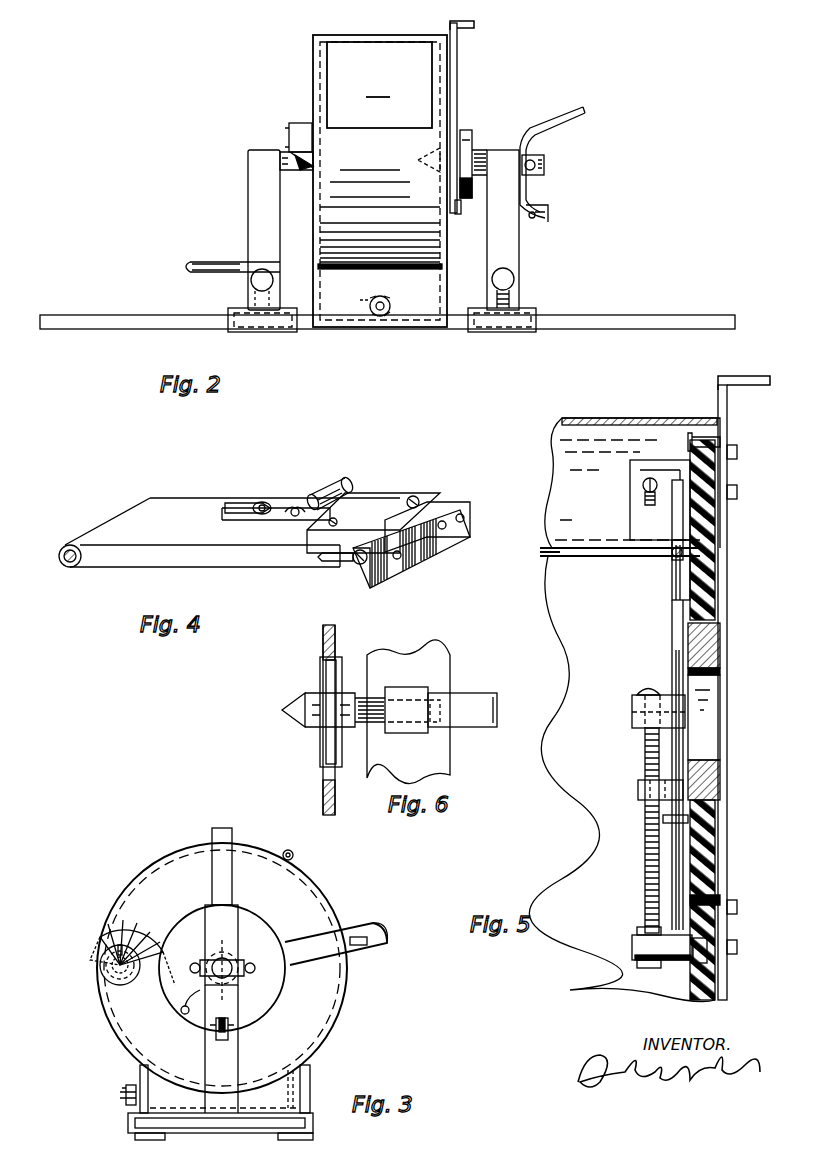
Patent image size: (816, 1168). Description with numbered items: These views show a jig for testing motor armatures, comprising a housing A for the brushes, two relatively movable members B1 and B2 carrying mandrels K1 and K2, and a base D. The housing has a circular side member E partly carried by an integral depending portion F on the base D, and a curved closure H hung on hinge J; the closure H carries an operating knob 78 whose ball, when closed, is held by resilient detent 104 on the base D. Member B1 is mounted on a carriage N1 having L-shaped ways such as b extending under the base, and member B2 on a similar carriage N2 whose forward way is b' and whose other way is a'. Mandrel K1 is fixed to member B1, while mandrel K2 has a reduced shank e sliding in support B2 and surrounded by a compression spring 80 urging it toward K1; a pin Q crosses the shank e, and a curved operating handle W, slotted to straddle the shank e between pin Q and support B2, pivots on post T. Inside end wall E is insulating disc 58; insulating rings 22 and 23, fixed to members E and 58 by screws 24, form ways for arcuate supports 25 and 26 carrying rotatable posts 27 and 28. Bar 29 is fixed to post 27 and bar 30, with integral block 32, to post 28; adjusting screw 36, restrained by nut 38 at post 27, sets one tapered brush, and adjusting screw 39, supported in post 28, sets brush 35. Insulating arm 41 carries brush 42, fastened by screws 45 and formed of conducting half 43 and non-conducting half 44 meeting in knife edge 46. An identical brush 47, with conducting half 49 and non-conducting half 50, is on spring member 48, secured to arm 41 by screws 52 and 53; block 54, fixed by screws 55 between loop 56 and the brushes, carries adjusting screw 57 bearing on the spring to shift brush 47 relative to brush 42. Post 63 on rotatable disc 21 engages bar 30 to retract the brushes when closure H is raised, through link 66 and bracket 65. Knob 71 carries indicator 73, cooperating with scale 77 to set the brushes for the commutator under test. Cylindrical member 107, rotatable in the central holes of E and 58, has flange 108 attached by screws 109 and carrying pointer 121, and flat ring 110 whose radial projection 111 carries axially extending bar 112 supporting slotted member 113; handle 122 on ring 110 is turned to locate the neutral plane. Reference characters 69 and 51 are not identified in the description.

In FIG. 2, the housing A is at (308, 58).
In FIG. 2, the closure H is at (318, 116).
In FIG. 3, the closure H is at (130, 852).
In FIG. 5, the closure H is at (600, 418).
In FIG. 2, the side member E is at (460, 56).
In FIG. 3, the side member E is at (325, 921).
In FIG. 5, the side member E is at (728, 594).
In FIG. 2, the handle 122 is at (466, 22).
In FIG. 3, the handle 122 is at (218, 827).
In FIG. 5, the handle 122 is at (718, 381).
In FIG. 2, the indicator window 69 is at (379, 85).
In FIG. 2, the slotted member 113 is at (298, 144).
In FIG. 2, the mandrel K1 is at (308, 168).
In FIG. 2, the mandrel K2 is at (420, 158).
In FIG. 6, the mandrel K2 is at (298, 703).
In FIG. 2, the mandrel-carrying member B1 is at (262, 190).
In FIG. 2, the mandrel-carrying member B2 is at (520, 252).
In FIG. 6, the mandrel-carrying member B2 is at (410, 688).
In FIG. 3, the mandrel-carrying member B2 is at (240, 1046).
In FIG. 2, the carriage N1 is at (236, 306).
In FIG. 2, the carriage N2 is at (538, 306).
In FIG. 6, the carriage N2 is at (452, 746).
In FIG. 2, the base D is at (650, 316).
In FIG. 3, the base D is at (240, 1133).
In FIG. 2, the L-shaped piece b is at (296, 342).
In FIG. 2, the L-shaped way b' is at (545, 344).
In FIG. 3, the L-shaped way b' is at (111, 1138).
In FIG. 3, the base foot a' is at (331, 1136).
In FIG. 2, the resilient detent 104 is at (366, 302).
In FIG. 2, the operating knob 78 is at (378, 316).
In FIG. 3, the operating knob 78 is at (122, 1093).
In FIG. 2, the depending portion F is at (446, 304).
In FIG. 3, the depending portion F is at (296, 1096).
In FIG. 2, the knob 71 is at (470, 130).
In FIG. 3, the knob 71 is at (100, 966).
In FIG. 2, the reduced shank e is at (483, 150).
In FIG. 6, the reduced shank e is at (370, 697).
In FIG. 3, the reduced shank e is at (228, 960).
In FIG. 2, the compression spring 80 is at (470, 195).
In FIG. 6, the compression spring 80 is at (372, 722).
In FIG. 2, the flat ring 110 is at (456, 216).
In FIG. 6, the flat ring 110 is at (343, 770).
In FIG. 3, the flat ring 110 is at (184, 1016).
In FIG. 5, the flat ring 110 is at (722, 802).
In FIG. 2, the operating handle W is at (640, 80).
In FIG. 6, the operating handle W is at (484, 695).
In FIG. 3, the operating handle W is at (227, 914).
In FIG. 2, the pin Q is at (546, 165).
In FIG. 3, the pin Q is at (200, 976).
In FIG. 2, the post T is at (530, 218).
In FIG. 3, the post T is at (222, 1040).
In FIG. 4, the arm 41 is at (98, 572).
In FIG. 4, the brush 42 is at (352, 587).
In FIG. 4, the conducting half 43 is at (353, 566).
In FIG. 4, the non-conducting half 44 is at (400, 576).
In FIG. 4, the screws 45 is at (404, 560).
In FIG. 4, the knife edge 46 is at (376, 591).
In FIG. 4, the brush 47 is at (474, 516).
In FIG. 4, the spring member 48 is at (276, 519).
In FIG. 4, the conducting half 49 is at (453, 536).
In FIG. 4, the non-conducting half 50 is at (466, 530).
In FIG. 4, the serrated section 51 is at (432, 553).
In FIG. 4, the screw 52 is at (262, 502).
In FIG. 4, the screw 53 is at (295, 508).
In FIG. 4, the block 54 is at (413, 490).
In FIG. 4, the screws 55 is at (339, 523).
In FIG. 4, the loop 56 is at (350, 481).
In FIG. 4, the adjusting screw 57 is at (420, 500).
In FIG. 3, the indicator 73 is at (146, 930).
In FIG. 3, the scale 77 is at (110, 935).
In FIG. 3, the screws 109 is at (191, 966).
In FIG. 3, the radial projection 111 is at (377, 925).
In FIG. 3, the axially extending bar 112 is at (365, 945).
In FIG. 3, the hinge J is at (295, 854).
In FIG. 5, the hinge J is at (575, 558).
In FIG. 5, the rotatable non-conducting disc 21 is at (688, 612).
In FIG. 5, the insulating ring 22 is at (737, 490).
In FIG. 5, the insulating ring 23 is at (722, 431).
In FIG. 5, the screws 24 is at (692, 441).
In FIG. 5, the arcuate insulating support 25 is at (737, 452).
In FIG. 5, the arcuate insulating support 26 is at (695, 966).
In FIG. 5, the post 27 is at (640, 466).
In FIG. 5, the post 28 is at (650, 961).
In FIG. 5, the bar 29 is at (672, 524).
In FIG. 5, the bar 30 is at (648, 762).
In FIG. 5, the block 32 is at (640, 792).
In FIG. 5, the brush 35 is at (632, 701).
In FIG. 5, the adjusting screw 36 is at (645, 502).
In FIG. 5, the nut 38 is at (643, 485).
In FIG. 5, the adjusting screw 39 is at (645, 687).
In FIG. 5, the centrally apertured disc 58 is at (718, 566).
In FIG. 5, the post 63 is at (663, 820).
In FIG. 5, the bracket 65 is at (672, 567).
In FIG. 5, the link 66 is at (678, 591).
In FIG. 5, the short cylindrical member 107 is at (722, 656).
In FIG. 5, the flange 108 is at (688, 641).
In FIG. 5, the pointer 121 is at (688, 861).